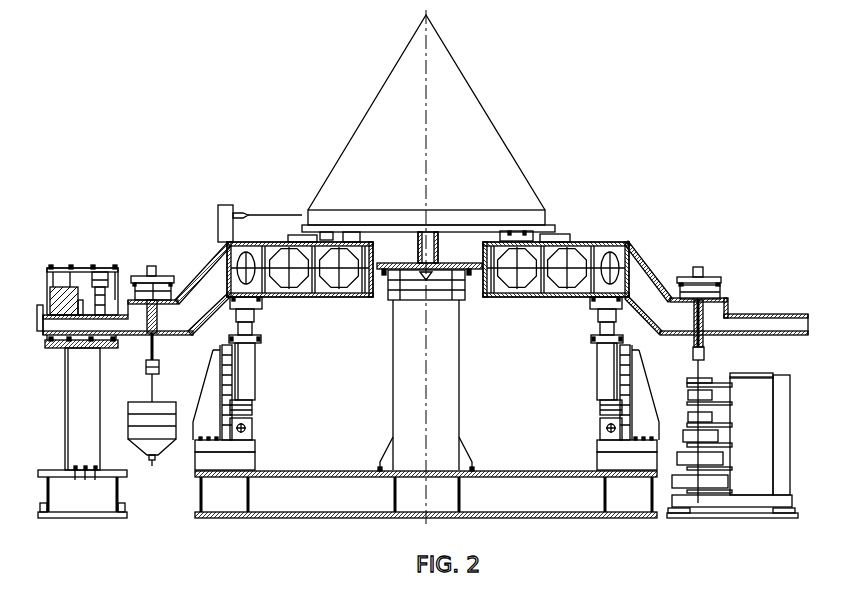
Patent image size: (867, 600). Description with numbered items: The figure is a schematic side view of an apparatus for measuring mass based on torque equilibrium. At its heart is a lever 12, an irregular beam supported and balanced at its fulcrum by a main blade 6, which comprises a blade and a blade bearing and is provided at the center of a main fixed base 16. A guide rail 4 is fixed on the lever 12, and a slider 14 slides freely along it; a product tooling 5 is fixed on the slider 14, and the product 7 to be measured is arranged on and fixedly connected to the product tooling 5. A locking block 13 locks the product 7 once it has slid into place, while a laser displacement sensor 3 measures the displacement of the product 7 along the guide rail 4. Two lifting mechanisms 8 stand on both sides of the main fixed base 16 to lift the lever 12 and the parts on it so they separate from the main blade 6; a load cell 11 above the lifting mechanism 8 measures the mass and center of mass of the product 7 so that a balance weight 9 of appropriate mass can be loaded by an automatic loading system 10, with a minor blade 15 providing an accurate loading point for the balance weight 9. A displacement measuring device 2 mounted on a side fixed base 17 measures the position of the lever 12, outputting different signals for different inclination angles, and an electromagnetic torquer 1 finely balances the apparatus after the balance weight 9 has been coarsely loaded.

The electromagnetic torquer 1 is at (68, 288).
The displacement measuring device 2 is at (100, 287).
The laser displacement sensor 3 is at (218, 205).
The guide rail 4 is at (297, 240).
The product tooling 5 is at (333, 218).
The main blade 6 is at (423, 273).
The product 7 is at (368, 108).
The lifting mechanism 8 is at (642, 298).
The balance weight 9 is at (705, 375).
The automatic loading system 10 is at (753, 373).
The load cell 11 is at (220, 303).
The lever 12 is at (629, 241).
The locking block 13 is at (551, 232).
The slider 14 is at (528, 235).
The minor blade 15 is at (700, 278).
The main fixed base 16 is at (458, 400).
The side fixed base 17 is at (65, 433).